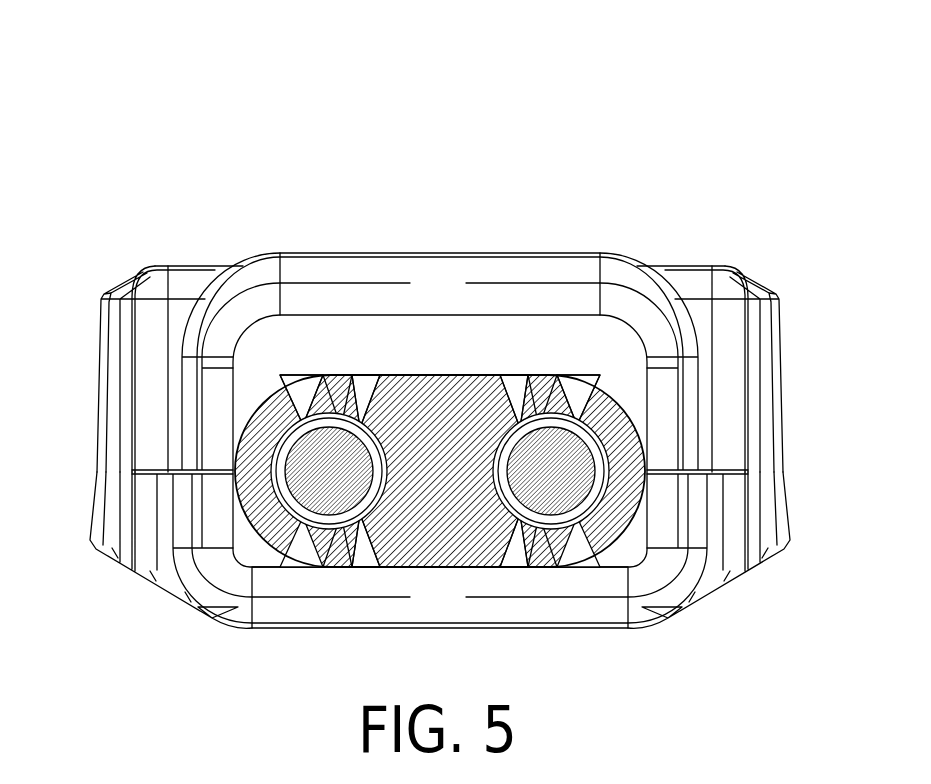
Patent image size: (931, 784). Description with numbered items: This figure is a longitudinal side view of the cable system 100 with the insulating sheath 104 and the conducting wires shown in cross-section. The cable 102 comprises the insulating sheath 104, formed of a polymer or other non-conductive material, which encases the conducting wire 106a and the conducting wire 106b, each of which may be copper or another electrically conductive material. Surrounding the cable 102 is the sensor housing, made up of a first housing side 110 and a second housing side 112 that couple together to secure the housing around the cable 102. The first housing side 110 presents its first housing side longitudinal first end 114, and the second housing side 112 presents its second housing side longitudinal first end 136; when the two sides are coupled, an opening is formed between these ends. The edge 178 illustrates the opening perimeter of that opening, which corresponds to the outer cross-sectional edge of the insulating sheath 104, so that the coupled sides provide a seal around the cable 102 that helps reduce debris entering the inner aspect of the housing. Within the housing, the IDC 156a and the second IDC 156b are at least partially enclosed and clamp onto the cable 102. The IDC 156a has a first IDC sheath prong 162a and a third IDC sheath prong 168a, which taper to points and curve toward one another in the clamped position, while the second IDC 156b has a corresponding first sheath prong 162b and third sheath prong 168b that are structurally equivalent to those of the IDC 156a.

The cable system 100 is at (122, 63).
The cable 102 is at (448, 407).
The insulating sheath 104 is at (461, 482).
The conducting wire 106a is at (577, 482).
The conducting wire 106b is at (354, 482).
The first housing side 110 is at (786, 373).
The second housing side 112 is at (786, 514).
The first housing side longitudinal first end 114 is at (461, 296).
The second housing side longitudinal first end 136 is at (462, 609).
The IDC 156a is at (582, 407).
The IDC(2) 156b is at (298, 407).
The first IDC sheath prong 162a is at (523, 398).
The first IDC(2) sheath prong 162b is at (357, 398).
The third IDC sheath prong 168a is at (522, 544).
The third IDC(2) sheath prong 168b is at (362, 544).
The edge 178 is at (477, 376).